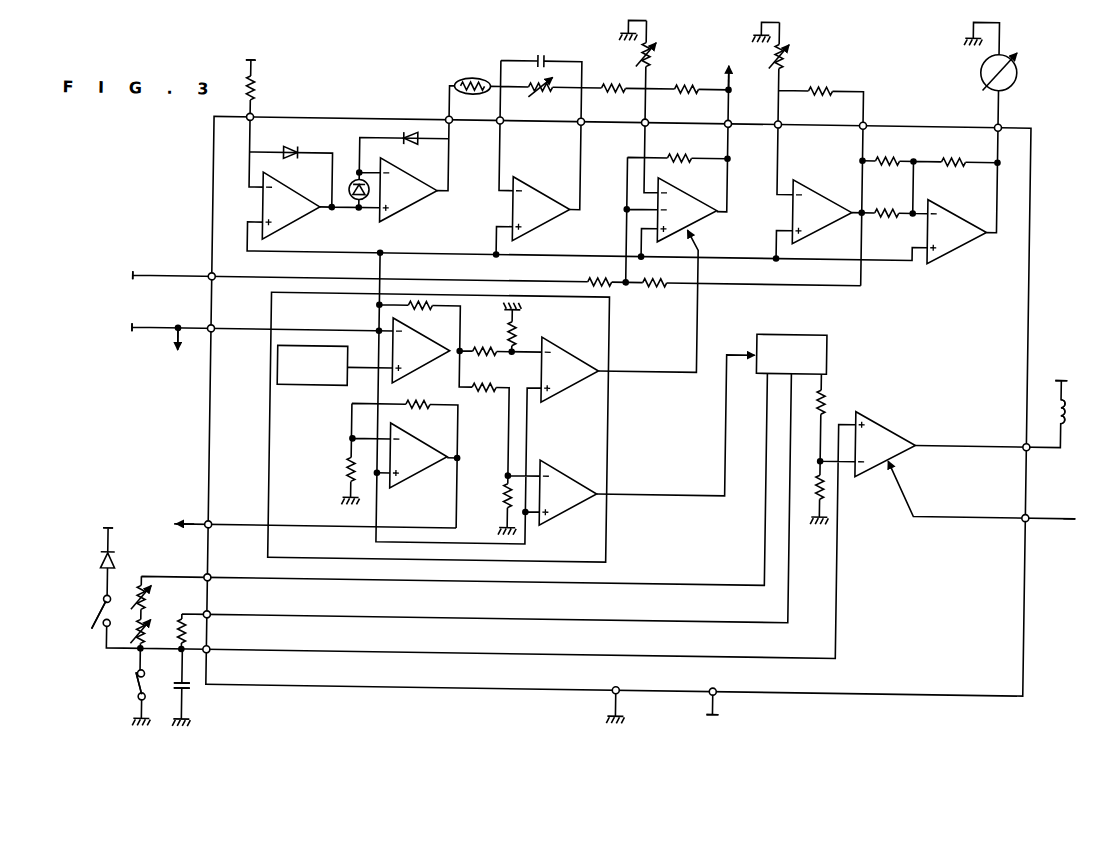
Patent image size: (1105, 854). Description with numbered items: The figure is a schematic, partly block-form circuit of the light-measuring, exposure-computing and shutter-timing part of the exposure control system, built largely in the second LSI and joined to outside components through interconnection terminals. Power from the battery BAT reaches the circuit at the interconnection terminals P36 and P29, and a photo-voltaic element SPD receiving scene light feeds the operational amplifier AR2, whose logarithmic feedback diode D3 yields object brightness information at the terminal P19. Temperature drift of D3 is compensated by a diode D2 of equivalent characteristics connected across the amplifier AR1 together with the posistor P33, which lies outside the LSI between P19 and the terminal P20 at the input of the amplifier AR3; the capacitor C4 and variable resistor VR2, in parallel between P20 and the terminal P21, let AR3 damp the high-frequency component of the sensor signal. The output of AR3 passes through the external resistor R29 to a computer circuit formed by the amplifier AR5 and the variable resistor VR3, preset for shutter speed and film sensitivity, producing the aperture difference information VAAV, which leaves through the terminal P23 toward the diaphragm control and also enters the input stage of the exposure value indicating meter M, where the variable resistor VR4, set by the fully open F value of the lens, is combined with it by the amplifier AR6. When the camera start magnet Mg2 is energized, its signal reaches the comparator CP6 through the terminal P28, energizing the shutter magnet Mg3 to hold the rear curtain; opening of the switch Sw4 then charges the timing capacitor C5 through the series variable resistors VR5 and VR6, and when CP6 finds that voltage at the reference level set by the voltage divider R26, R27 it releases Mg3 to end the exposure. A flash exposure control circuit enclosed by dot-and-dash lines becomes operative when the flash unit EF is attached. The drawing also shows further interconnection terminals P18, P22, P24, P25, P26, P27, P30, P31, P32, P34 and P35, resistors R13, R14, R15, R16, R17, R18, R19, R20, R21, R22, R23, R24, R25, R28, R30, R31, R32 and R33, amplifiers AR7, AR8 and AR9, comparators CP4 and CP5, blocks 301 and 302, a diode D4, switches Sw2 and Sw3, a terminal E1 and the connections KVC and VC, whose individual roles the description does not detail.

The terminal P18 is at (261, 128).
The interconnection terminal P19 is at (460, 131).
The interconnection terminal P20 is at (511, 132).
The interconnection terminal P21 is at (592, 133).
The terminal P22 is at (656, 134).
The interconnection terminal P23 is at (739, 135).
The terminal P24 is at (789, 136).
The terminal P25 is at (874, 137).
The terminal P26 is at (1009, 139).
The terminal P27 is at (1016, 440).
The interconnection terminal P28 is at (1012, 510).
The interconnection terminal P29 is at (619, 682).
The terminal P30 is at (219, 642).
The terminal P31 is at (219, 607).
The terminal P32 is at (220, 570).
The posistor P33 is at (221, 517).
The terminal P34 is at (223, 321).
The terminal P35 is at (224, 269).
The interconnection terminal P36 is at (718, 684).
The resistor R13 is at (423, 317).
The resistor R14 is at (342, 471).
The resistor R15 is at (421, 395).
The resistor R16 is at (486, 344).
The resistor R17 is at (524, 334).
The resistor R18 is at (485, 380).
The resistor R19 is at (497, 497).
The resistor R20 is at (601, 274).
The resistor R21 is at (655, 294).
The resistor R22 is at (681, 148).
The resistor R23 is at (892, 175).
The resistor R24 is at (889, 225).
The resistor R25 is at (956, 176).
The voltage divider resistor R26 is at (833, 403).
The voltage divider resistor R27 is at (808, 488).
The resistor R28 is at (263, 91).
The external resistor R29 is at (614, 100).
The resistor R30 is at (688, 101).
The resistor R31 is at (822, 102).
The resistor R32 is at (169, 631).
The resistor R33 is at (472, 80).
The variable resistor VR2 is at (548, 97).
The variable resistor VR3 is at (660, 54).
The external variable resistor VR4 is at (793, 56).
The variable resistor VR5 is at (155, 600).
The variable resistor VR6 is at (131, 630).
The capacitor C4 is at (545, 54).
The timing capacitor C5 is at (188, 698).
The diode D2 is at (293, 146).
The feedback diode D3 is at (409, 151).
The diode D4 is at (119, 563).
The amplifier AR1 is at (291, 206).
The operational amplifier AR2 is at (409, 190).
The amplifier AR3 is at (541, 209).
The amplifier AR5 is at (687, 210).
The amplifier AR6 is at (822, 212).
The operational amplifier AR7 is at (957, 232).
The operational amplifier AR8 is at (419, 456).
The operational amplifier AR9 is at (421, 351).
The comparator CP4 is at (570, 370).
The comparator CP5 is at (568, 493).
The comparator CP6 is at (885, 445).
The circuit block 301 is at (312, 365).
The circuit block 302 is at (791, 354).
The photo-voltaic element SPD is at (356, 203).
The exposure value indicating meter M is at (1007, 71).
The switch Sw2 is at (107, 519).
The switch Sw3 is at (93, 612).
The switch Sw4 is at (152, 685).
The camera start magnet Mg2 is at (1081, 523).
The shutter magnet Mg3 is at (1047, 412).
The battery BAT is at (1057, 370).
The terminal E1 is at (720, 716).
The voltage KVC is at (203, 288).
The voltage VC is at (176, 352).
The flash unit EF is at (121, 304).
The aperture difference information VAAV is at (727, 67).